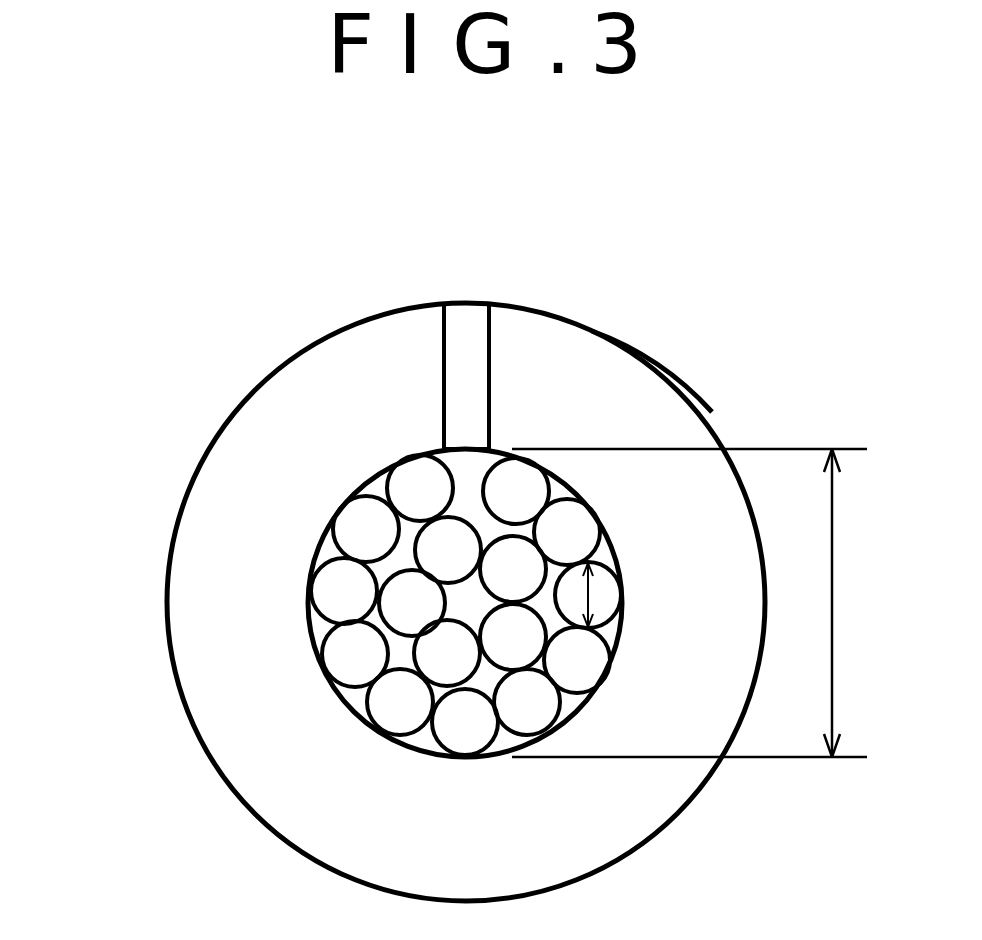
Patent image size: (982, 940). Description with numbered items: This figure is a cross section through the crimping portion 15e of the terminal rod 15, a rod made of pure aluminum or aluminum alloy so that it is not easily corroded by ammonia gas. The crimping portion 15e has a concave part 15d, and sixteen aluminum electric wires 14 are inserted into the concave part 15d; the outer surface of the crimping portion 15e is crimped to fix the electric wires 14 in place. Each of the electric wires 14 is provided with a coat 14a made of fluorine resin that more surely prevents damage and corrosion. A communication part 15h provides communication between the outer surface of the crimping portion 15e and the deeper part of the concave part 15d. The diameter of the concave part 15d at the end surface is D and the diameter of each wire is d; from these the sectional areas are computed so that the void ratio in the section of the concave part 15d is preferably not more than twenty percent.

The electric wires 14 is at (338, 546).
The coat 14a is at (325, 537).
The terminal rod 15 is at (217, 770).
The concave part 15d is at (408, 748).
The crimping portion 15e is at (658, 398).
The communication part 15h is at (490, 352).
The diameter of each wire d is at (590, 593).
The diameter of the concave part D is at (693, 603).